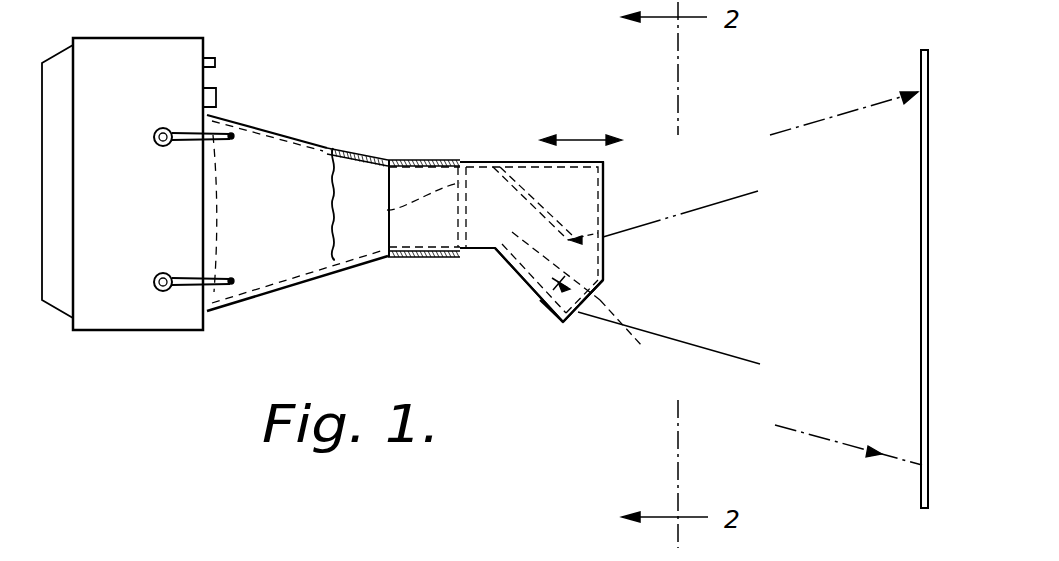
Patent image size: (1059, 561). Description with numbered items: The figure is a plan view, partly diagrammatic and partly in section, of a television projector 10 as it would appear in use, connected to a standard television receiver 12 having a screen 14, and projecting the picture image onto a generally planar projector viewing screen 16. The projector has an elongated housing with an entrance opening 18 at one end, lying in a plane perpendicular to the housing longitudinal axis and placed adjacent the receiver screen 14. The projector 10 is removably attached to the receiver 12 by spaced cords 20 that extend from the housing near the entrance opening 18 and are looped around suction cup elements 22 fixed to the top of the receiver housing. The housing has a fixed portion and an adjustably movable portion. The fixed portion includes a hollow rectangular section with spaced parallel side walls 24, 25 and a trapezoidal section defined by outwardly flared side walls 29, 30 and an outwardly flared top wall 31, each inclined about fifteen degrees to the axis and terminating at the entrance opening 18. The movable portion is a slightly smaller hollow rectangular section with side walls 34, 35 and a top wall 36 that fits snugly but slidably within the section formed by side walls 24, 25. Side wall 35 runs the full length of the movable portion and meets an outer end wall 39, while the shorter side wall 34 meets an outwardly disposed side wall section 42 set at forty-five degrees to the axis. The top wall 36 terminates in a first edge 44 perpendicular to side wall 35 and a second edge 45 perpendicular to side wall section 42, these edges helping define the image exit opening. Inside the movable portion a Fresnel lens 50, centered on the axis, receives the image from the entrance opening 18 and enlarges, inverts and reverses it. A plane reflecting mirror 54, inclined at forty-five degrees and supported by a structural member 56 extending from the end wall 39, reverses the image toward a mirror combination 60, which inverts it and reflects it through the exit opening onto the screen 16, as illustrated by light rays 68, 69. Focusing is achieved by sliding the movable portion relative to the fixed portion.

The television projector 10 is at (512, 292).
The television receiver 12 is at (242, 73).
The screen 14 is at (216, 192).
The projector viewing screen 16 is at (920, 345).
The entrance opening 18 is at (203, 224).
The cords 20 is at (173, 143).
The suction cup elements 22 is at (152, 137).
The side wall 24 is at (408, 262).
The side wall 25 is at (418, 159).
The side wall 29 is at (344, 150).
The side wall 30 is at (303, 284).
The top wall 31 is at (290, 192).
The side wall 34 is at (492, 256).
The side wall 35 is at (475, 160).
The top wall 36 is at (423, 230).
The outer end wall 39 is at (604, 178).
The side wall section 42 is at (543, 304).
The first edge 44 is at (606, 280).
The second edge 45 is at (600, 300).
The lens 50 is at (388, 211).
The plane reflecting mirror 54 is at (522, 200).
The structural member 56 is at (604, 258).
The mirror combination 60 is at (633, 339).
The light ray 68 is at (762, 365).
The light ray 69 is at (772, 136).